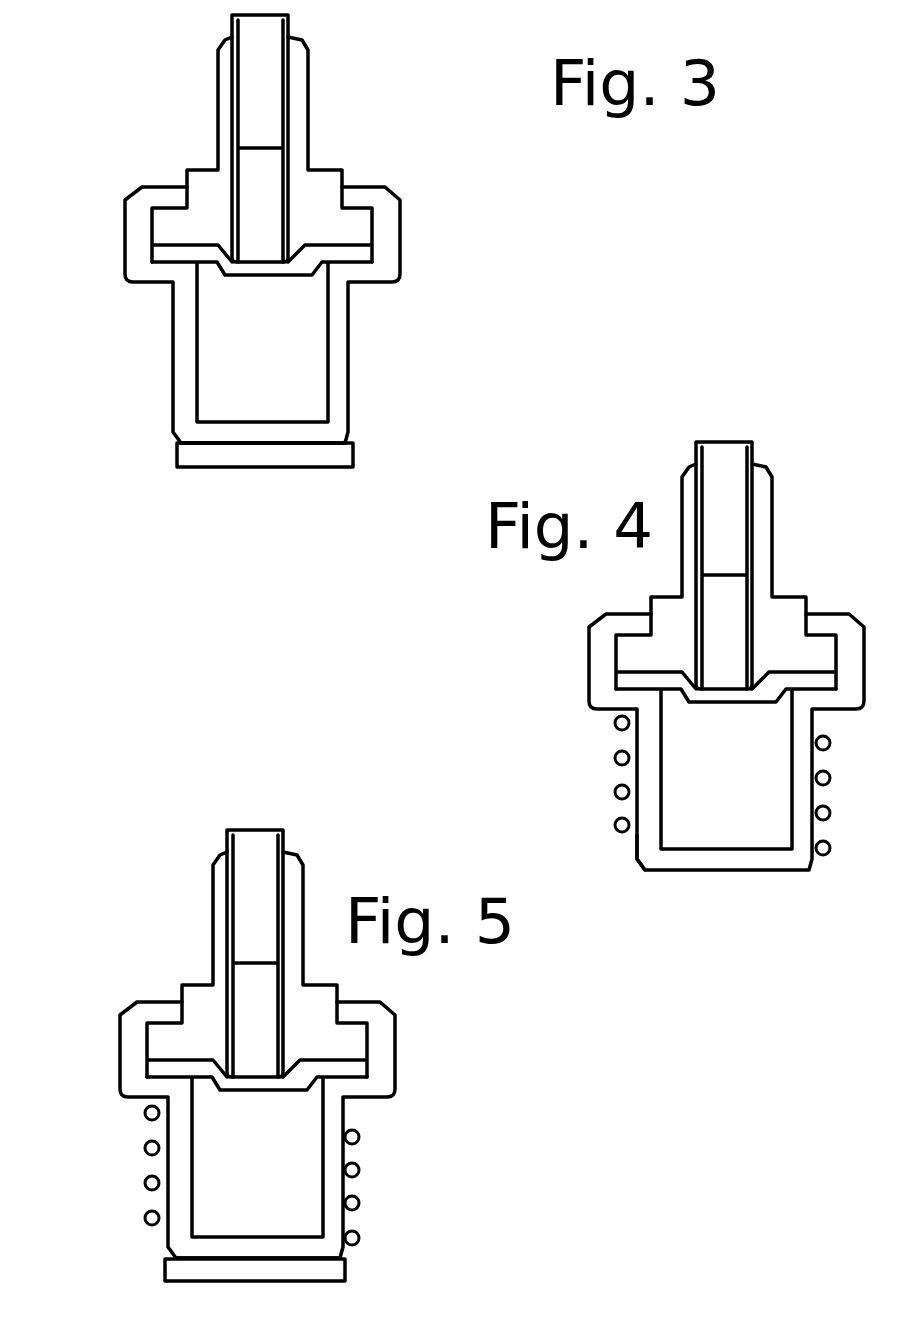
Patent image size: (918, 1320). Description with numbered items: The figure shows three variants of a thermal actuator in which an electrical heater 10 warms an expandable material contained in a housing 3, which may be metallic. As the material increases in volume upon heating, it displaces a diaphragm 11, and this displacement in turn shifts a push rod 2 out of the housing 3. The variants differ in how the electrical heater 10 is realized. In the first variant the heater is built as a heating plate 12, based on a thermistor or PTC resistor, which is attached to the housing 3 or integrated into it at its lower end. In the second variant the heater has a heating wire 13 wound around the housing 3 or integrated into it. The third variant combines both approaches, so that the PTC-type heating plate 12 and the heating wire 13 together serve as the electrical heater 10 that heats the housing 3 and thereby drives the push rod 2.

In FIG. 3, the push rod 2 is at (262, 100).
In FIG. 4, the push rod 2 is at (724, 565).
In FIG. 5, the push rod 2 is at (255, 953).
In FIG. 3, the housing 3 is at (340, 402).
In FIG. 4, the housing 3 is at (726, 742).
In FIG. 5, the housing 3 is at (257, 1130).
In FIG. 3, the electrical heater 10 is at (233, 452).
In FIG. 4, the electrical heater 10 is at (620, 828).
In FIG. 5, the electrical heater 10 is at (352, 1243).
In FIG. 3, the diaphragm 11 is at (340, 257).
In FIG. 4, the diaphragm 11 is at (726, 576).
In FIG. 5, the diaphragm 11 is at (257, 964).
In FIG. 3, the heating plate 12 is at (192, 453).
In FIG. 5, the heating plate 12 is at (167, 1267).
In FIG. 4, the heating wire 13 is at (620, 792).
In FIG. 5, the heating wire 13 is at (353, 1168).